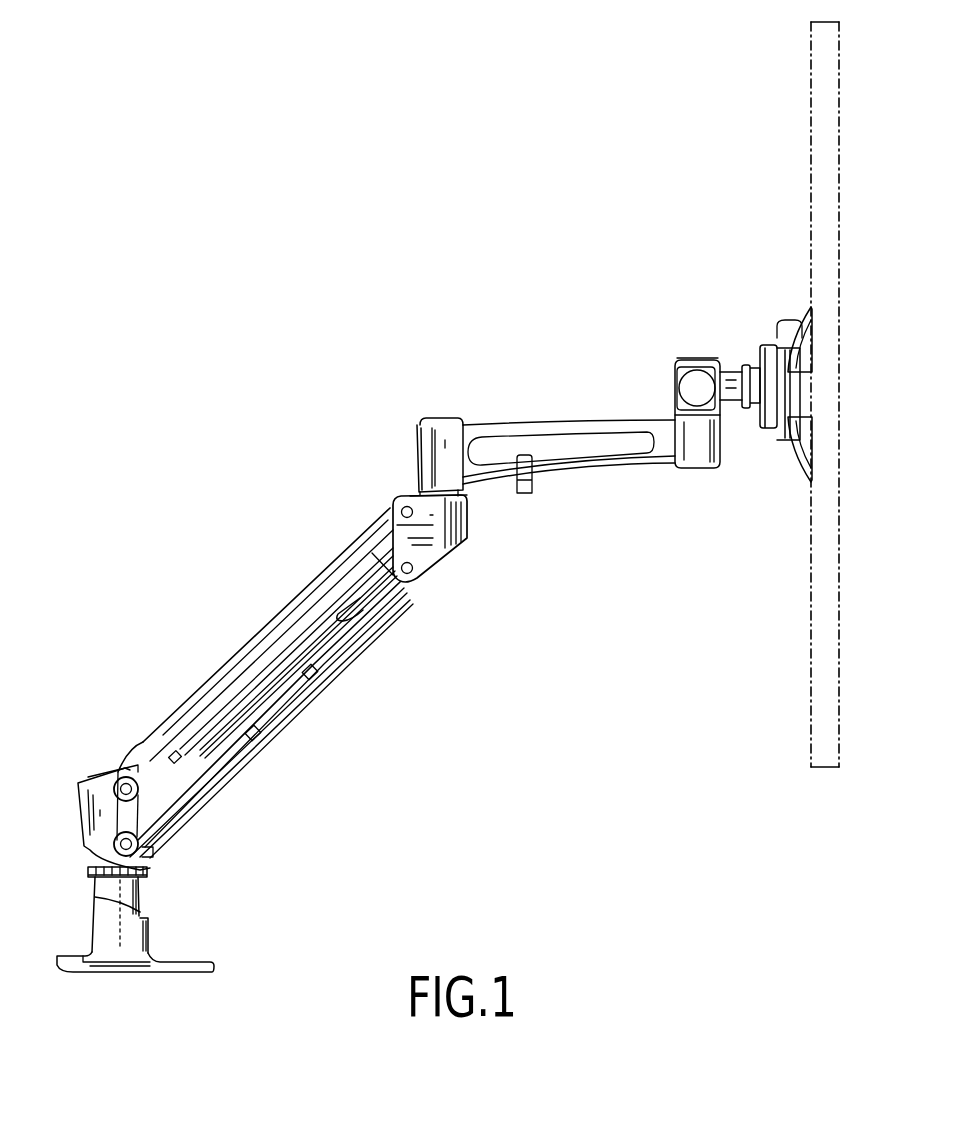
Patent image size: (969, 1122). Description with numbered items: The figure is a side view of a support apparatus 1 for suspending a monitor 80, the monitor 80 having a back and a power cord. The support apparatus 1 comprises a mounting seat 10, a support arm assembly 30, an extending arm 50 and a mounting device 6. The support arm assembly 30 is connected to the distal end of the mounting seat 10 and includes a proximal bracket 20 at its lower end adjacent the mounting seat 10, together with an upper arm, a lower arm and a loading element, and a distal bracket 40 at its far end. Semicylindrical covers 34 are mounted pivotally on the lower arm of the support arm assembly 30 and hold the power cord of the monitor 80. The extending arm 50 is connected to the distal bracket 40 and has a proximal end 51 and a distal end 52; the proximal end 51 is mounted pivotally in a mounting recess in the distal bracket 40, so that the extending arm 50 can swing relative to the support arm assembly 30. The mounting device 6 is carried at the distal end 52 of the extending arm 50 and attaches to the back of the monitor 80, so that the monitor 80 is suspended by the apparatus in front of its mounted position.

The support apparatus 1 is at (288, 347).
The mounting device 6 is at (726, 317).
The mounting seat 10 is at (143, 903).
The proximal bracket 20 is at (95, 762).
The support arm assembly 30 is at (252, 623).
The cover 34 is at (267, 693).
The distal bracket 40 is at (458, 561).
The extending arm 50 is at (560, 390).
The proximal end 51 is at (415, 438).
The distal end 52 is at (705, 460).
The monitor 80 is at (817, 114).